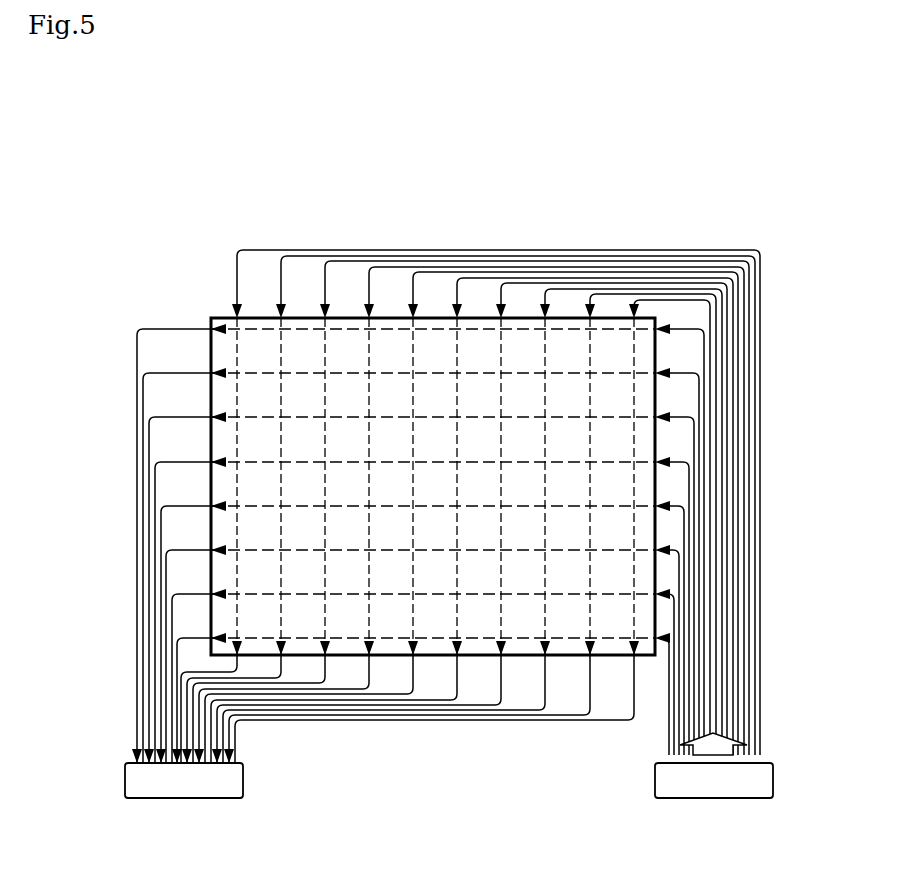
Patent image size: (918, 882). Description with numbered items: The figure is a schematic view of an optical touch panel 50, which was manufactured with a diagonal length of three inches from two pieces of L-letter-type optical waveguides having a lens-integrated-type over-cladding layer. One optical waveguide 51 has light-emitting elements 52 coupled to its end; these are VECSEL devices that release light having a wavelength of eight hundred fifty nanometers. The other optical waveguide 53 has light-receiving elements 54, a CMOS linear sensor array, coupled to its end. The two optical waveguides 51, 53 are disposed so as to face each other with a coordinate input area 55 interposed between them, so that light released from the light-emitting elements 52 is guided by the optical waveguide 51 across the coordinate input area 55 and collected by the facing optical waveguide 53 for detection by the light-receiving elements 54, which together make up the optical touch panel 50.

The optical touch panel 50 is at (452, 103).
The optical waveguide 51 is at (728, 468).
The light-emitting elements 52 is at (692, 798).
The optical waveguide 53 is at (150, 605).
The light-receiving elements 54 is at (170, 799).
The coordinate input area 55 is at (305, 397).